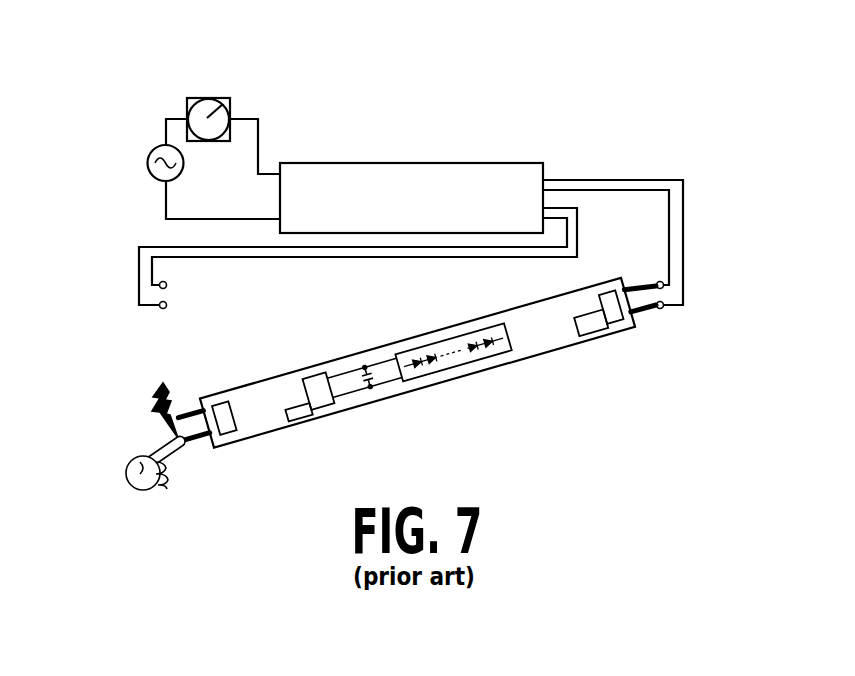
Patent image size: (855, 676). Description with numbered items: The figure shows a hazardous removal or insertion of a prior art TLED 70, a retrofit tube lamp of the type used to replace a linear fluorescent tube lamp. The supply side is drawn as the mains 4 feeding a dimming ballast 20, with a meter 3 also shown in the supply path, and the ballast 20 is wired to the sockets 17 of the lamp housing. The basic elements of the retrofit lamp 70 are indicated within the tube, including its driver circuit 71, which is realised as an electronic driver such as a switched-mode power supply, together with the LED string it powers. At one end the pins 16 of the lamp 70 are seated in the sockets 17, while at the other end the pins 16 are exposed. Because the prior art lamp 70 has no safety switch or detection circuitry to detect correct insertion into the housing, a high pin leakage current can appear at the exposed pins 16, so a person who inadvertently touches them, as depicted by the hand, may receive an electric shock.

The power meter 3 is at (210, 98).
The mains 4 is at (148, 161).
The dimming ballast 20 is at (430, 163).
The sockets 17 is at (160, 284).
The pins 16 is at (183, 410).
The prior art TLED 70 is at (428, 400).
The driver circuit 71 is at (323, 408).